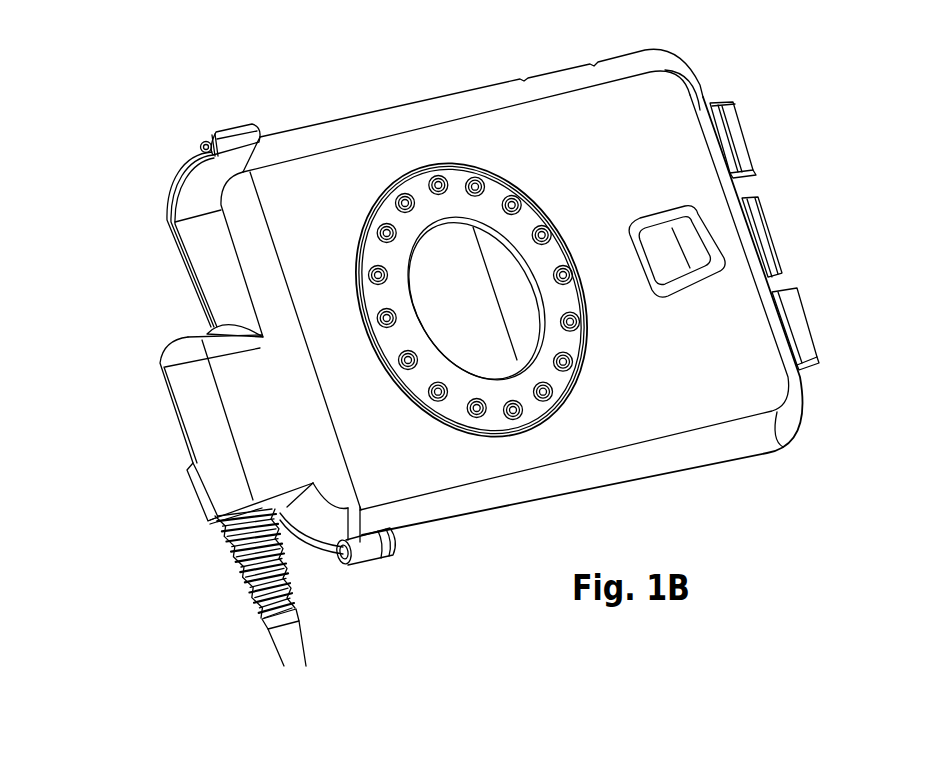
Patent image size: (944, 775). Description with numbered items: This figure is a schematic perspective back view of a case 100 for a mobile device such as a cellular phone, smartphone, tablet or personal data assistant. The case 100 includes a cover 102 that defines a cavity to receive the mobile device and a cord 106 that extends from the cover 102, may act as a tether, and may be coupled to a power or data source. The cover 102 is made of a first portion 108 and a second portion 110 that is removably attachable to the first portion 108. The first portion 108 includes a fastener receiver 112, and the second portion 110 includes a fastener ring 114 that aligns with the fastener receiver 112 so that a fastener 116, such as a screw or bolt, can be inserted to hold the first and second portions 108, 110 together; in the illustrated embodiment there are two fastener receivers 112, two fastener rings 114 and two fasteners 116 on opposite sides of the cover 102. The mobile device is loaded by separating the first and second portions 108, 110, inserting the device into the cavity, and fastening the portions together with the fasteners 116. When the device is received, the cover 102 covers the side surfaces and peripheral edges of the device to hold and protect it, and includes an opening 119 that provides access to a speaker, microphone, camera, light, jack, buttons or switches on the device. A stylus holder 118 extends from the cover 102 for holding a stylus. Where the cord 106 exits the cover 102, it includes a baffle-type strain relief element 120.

The case 100 is at (269, 72).
The cover 102 is at (535, 78).
The cord 106 is at (277, 640).
The first portion 108 is at (427, 100).
The second portion 110 is at (174, 227).
The fastener receiver 112 is at (237, 128).
The fastener ring 114 is at (207, 140).
The fastener 116 is at (201, 147).
The stylus holder 118 is at (736, 113).
The opening 119 is at (668, 243).
The strain relief element 120 is at (291, 584).